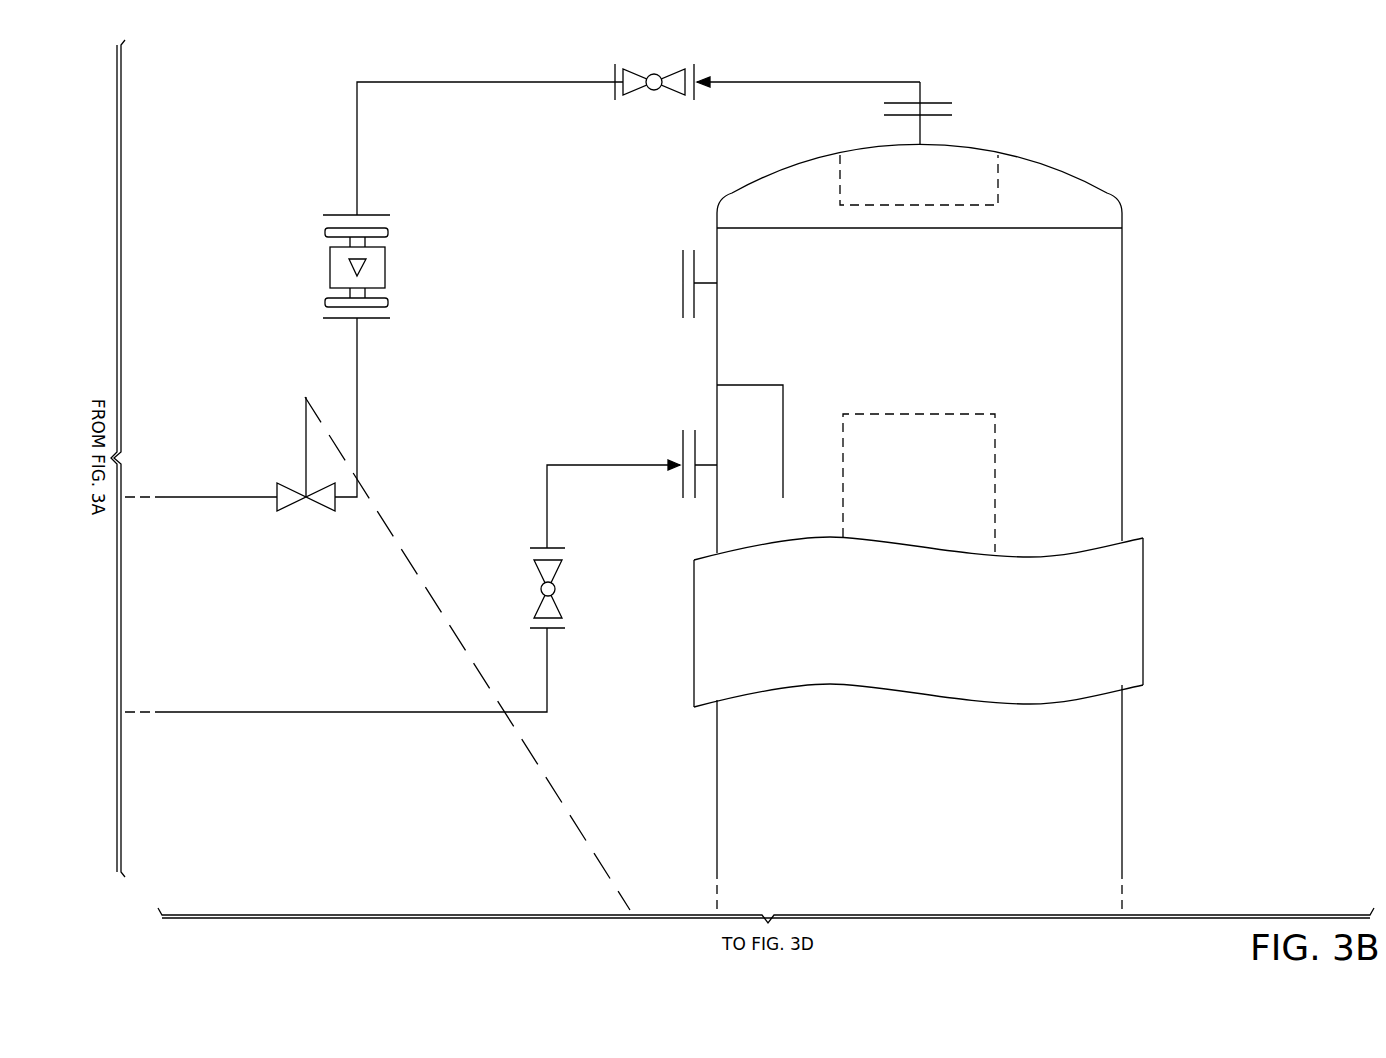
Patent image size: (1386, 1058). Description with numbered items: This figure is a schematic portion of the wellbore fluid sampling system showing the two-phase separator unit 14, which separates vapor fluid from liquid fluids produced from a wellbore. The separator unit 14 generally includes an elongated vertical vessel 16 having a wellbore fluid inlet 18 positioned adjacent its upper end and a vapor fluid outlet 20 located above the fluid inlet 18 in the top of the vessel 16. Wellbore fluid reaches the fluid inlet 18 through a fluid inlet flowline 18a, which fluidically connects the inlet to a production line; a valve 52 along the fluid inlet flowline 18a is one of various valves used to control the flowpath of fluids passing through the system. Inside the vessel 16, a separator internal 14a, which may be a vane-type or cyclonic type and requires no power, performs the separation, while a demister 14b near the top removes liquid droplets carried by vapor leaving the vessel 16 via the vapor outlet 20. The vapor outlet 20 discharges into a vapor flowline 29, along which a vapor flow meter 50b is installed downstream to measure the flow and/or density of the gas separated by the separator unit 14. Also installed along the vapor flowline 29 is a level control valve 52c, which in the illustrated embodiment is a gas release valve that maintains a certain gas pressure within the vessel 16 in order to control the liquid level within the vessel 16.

The two-phase separator unit 14 is at (1108, 162).
The separator internal 14a is at (997, 497).
The demister 14b is at (1000, 185).
The vessel 16 is at (780, 173).
The wellbore fluid inlet 18 is at (688, 430).
The fluid inlet flowline 18a is at (615, 467).
The vapor fluid outlet 20 is at (955, 108).
The vapor flowline 29 is at (357, 147).
The vapor flow meter 50b is at (330, 268).
The valve 52 is at (536, 588).
The level control valve 52c is at (320, 507).